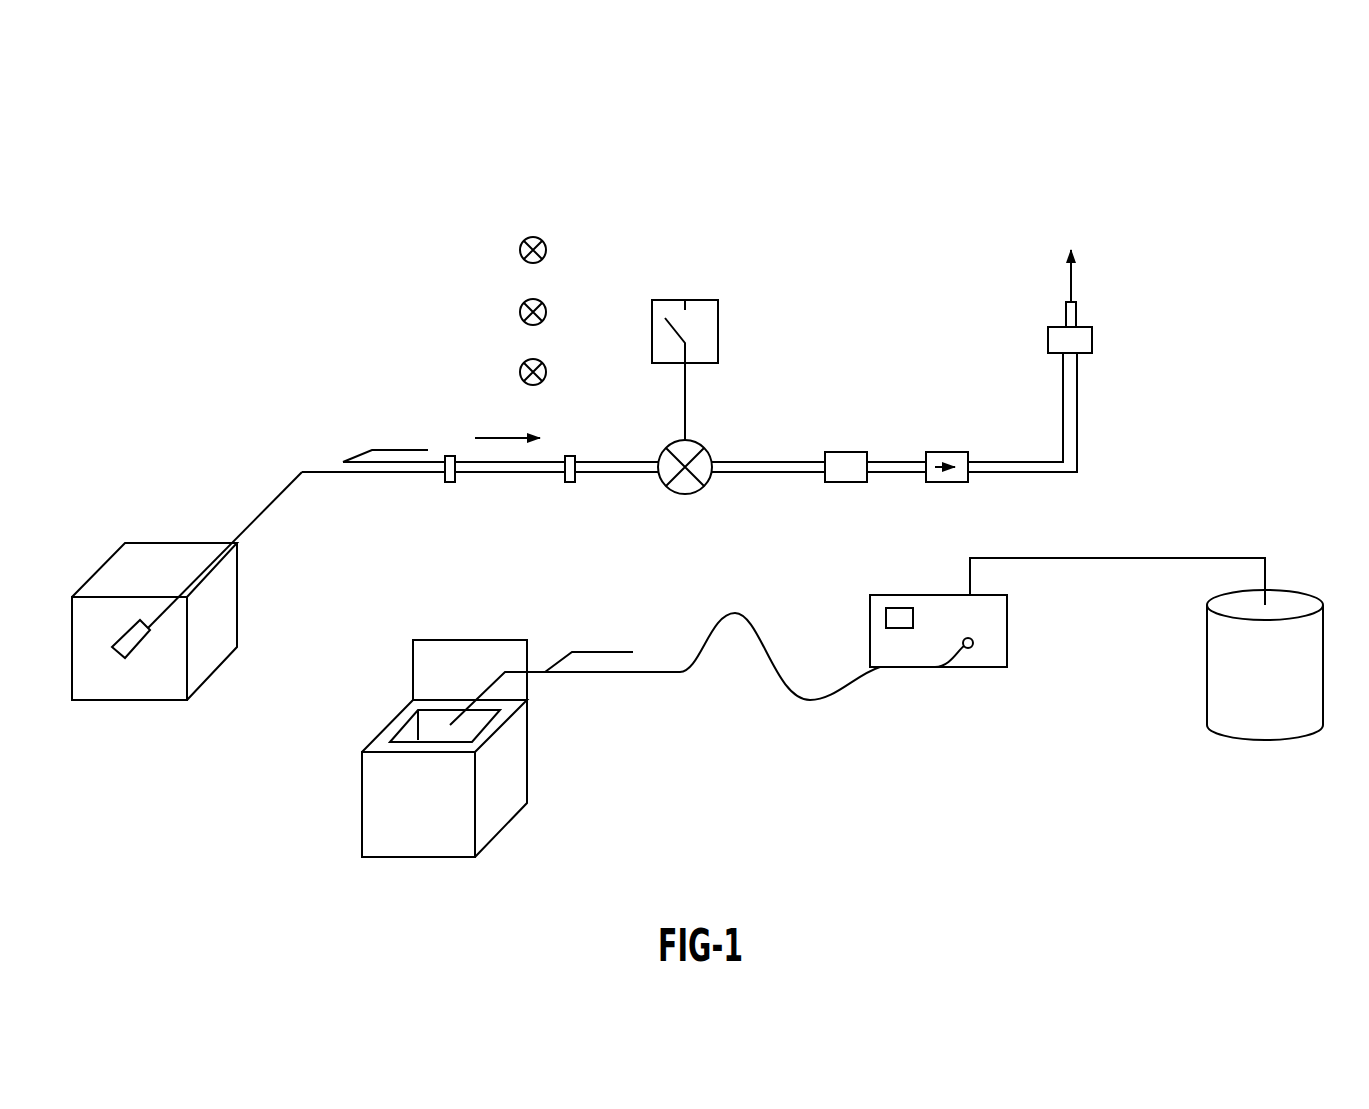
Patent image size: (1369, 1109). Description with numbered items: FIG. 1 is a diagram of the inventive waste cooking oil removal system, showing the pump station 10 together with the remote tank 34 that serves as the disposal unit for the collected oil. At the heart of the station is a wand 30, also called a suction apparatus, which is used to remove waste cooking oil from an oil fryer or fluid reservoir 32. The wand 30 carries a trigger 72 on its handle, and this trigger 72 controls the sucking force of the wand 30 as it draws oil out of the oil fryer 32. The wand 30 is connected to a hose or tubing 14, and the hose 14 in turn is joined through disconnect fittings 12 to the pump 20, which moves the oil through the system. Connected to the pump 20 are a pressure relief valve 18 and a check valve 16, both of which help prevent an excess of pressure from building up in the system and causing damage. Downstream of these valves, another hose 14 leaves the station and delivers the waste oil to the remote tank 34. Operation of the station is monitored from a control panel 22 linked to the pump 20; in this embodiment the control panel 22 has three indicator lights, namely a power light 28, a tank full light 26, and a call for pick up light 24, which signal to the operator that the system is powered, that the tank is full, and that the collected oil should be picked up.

The pump station 10 is at (890, 216).
The disconnect fittings 12 is at (1106, 327).
The hose 14 is at (1077, 406).
The check valve 16 is at (952, 443).
The pressure relief valve 18 is at (848, 443).
The pump 20 is at (716, 442).
The control panel 22 is at (692, 300).
The call for pick up light 24 is at (556, 358).
The tank full light 26 is at (556, 298).
The power light 28 is at (556, 238).
The wand 30 is at (256, 473).
The oil fryer 32 is at (198, 651).
The remote tank 34 is at (1218, 665).
The trigger 72 is at (372, 450).